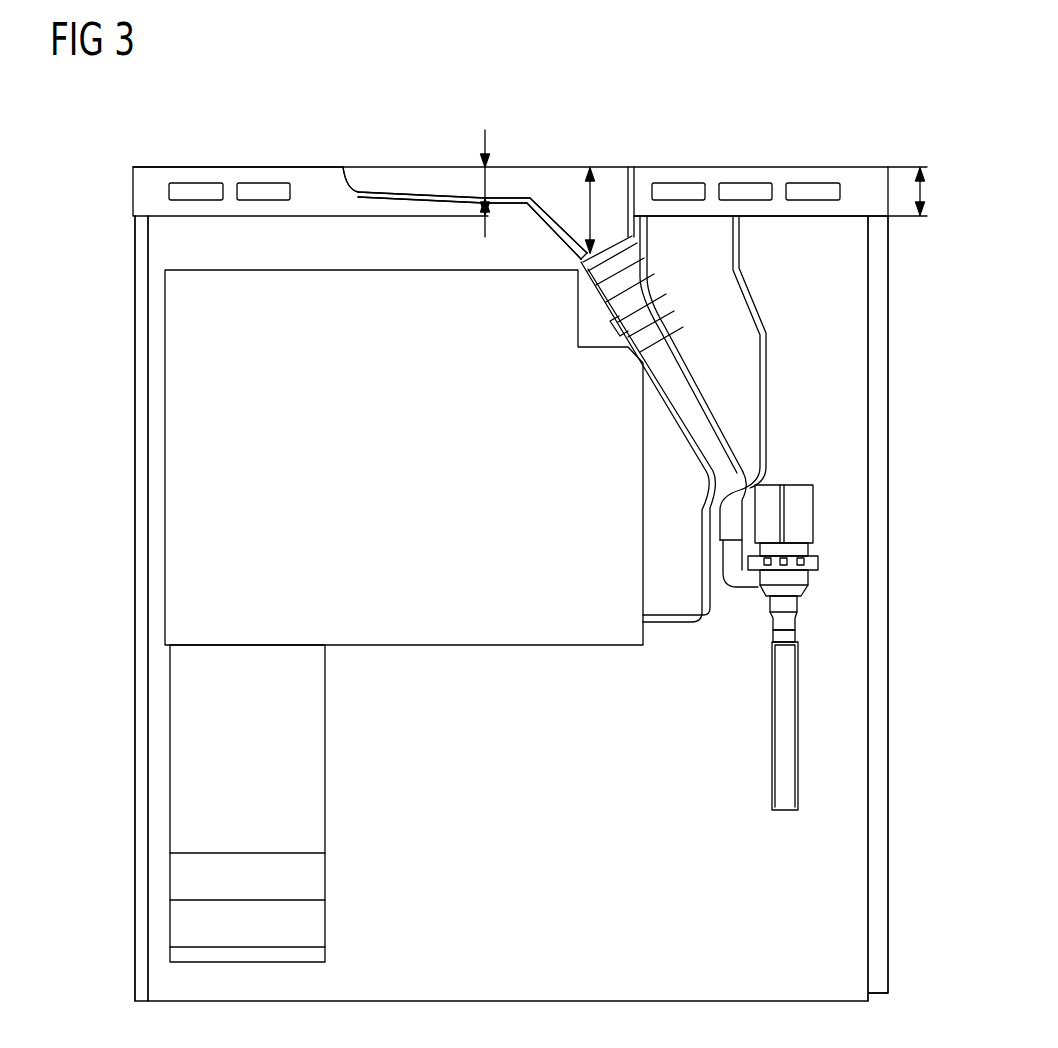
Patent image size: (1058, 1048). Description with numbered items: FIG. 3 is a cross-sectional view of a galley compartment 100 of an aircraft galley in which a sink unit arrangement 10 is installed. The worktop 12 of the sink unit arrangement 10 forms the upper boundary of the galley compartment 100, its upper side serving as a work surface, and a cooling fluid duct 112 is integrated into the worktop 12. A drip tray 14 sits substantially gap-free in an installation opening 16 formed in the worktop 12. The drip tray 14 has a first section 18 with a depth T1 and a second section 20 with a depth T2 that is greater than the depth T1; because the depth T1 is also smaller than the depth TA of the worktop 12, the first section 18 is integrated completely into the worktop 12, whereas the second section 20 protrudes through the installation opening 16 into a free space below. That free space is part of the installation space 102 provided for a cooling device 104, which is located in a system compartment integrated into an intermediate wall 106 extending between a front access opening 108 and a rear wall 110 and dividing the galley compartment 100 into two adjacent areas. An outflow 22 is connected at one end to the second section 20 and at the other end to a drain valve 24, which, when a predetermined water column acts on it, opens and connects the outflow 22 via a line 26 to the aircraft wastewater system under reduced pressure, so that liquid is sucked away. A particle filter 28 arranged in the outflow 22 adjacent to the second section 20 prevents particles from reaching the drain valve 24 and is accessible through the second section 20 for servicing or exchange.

The galley compartment 100 is at (852, 105).
The sink unit arrangement 10 is at (602, 135).
The worktop 12 is at (317, 181).
The drip tray 14 is at (394, 160).
The installation opening 16 is at (406, 193).
The first section 18 is at (455, 196).
The second section 20 is at (567, 213).
The outflow 22 is at (697, 428).
The drain valve 24 is at (800, 516).
The line 26 is at (785, 725).
The particle filter 28 is at (632, 298).
The installation space 102 is at (232, 502).
The cooling device 104 is at (178, 420).
The intermediate wall 106 is at (855, 265).
The front access opening 108 is at (128, 592).
The rear wall 110 is at (880, 643).
The cooling fluid duct 112 is at (200, 192).
The depth of the first section T1 is at (488, 162).
The depth of the second section T2 is at (598, 213).
The depth of the worktop TA is at (922, 190).